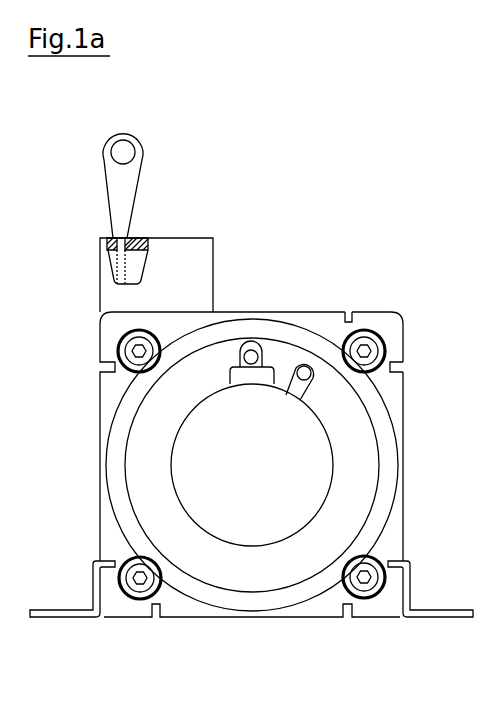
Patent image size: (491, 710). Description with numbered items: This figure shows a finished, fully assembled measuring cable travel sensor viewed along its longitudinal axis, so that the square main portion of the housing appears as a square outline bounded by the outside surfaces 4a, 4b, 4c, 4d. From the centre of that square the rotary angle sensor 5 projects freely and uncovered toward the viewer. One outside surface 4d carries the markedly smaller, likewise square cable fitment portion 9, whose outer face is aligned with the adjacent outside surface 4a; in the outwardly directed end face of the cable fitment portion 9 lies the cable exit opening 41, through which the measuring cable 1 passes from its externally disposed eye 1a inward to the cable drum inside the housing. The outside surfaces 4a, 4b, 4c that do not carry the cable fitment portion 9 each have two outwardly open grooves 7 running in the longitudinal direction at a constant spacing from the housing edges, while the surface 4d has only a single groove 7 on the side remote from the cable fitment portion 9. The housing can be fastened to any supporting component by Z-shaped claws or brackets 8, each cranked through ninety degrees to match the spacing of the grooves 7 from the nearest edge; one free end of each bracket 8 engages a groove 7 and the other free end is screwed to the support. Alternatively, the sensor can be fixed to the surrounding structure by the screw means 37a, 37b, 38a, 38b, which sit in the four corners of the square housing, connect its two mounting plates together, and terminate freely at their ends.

The eye 1a is at (131, 178).
The cable exit opening 41 is at (113, 239).
The measuring cable 1 is at (147, 243).
The cable fitment portion 9 is at (156, 275).
The outside surface 4a is at (100, 462).
The outside surface 4b is at (252, 618).
The outside surface 4c is at (404, 462).
The outside surface 4d is at (232, 311).
The groove 7 is at (350, 309).
The rotary angle sensor 5 is at (252, 465).
The screw means 37a is at (137, 349).
The screw means 37b is at (364, 577).
The screw means 38a is at (140, 578).
The screw means 38b is at (366, 349).
The claw or bracket 8 is at (58, 609).